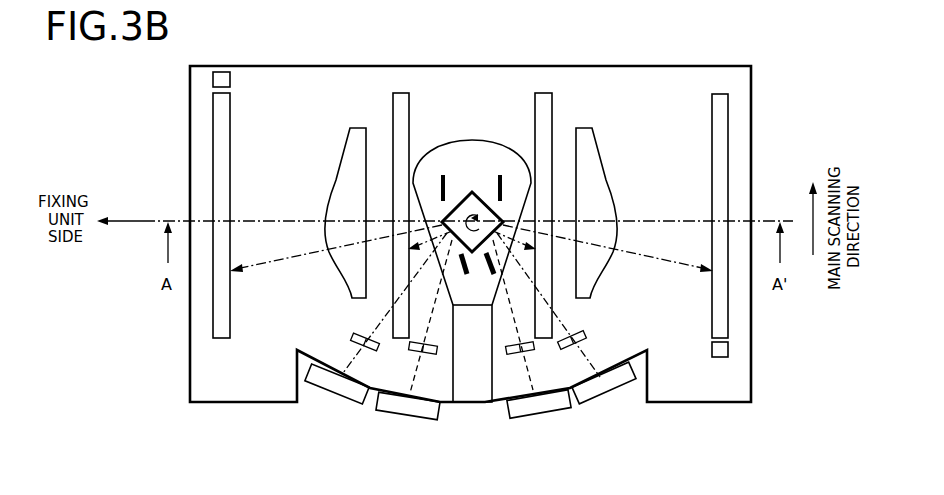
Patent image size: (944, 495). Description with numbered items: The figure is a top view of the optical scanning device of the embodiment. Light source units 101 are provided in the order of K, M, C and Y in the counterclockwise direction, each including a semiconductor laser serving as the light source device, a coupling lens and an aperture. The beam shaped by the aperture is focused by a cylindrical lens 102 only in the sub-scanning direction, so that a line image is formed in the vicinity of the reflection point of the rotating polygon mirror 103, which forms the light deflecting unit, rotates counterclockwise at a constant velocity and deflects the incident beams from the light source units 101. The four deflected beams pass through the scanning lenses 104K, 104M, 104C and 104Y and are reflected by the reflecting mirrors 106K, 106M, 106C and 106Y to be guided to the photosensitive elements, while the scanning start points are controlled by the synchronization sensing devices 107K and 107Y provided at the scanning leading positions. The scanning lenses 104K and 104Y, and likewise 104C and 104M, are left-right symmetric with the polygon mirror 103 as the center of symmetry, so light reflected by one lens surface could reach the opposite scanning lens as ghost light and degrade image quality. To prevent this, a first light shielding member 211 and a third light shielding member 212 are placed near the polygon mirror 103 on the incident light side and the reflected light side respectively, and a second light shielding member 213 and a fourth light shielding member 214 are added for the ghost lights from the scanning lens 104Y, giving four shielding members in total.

The light source unit 101 is at (350, 402).
The cylindrical lens 102 is at (573, 348).
The polygon mirror 103 is at (470, 140).
The scanning lens 104K is at (316, 164).
The scanning lens 104M is at (358, 133).
The scanning lens 104C is at (624, 164).
The scanning lens 104Y is at (584, 133).
The reflecting mirror 106K is at (221, 318).
The reflecting mirror 106M is at (403, 97).
The reflecting mirror 106C is at (548, 97).
The reflecting mirror 106Y is at (722, 307).
The synchronization sensing device 107K is at (218, 78).
The synchronization sensing device 107Y is at (720, 352).
The first light shielding member 211 is at (468, 278).
The third light shielding member 212 is at (443, 175).
The second light shielding member 213 is at (495, 276).
The fourth light shielding member 214 is at (500, 175).